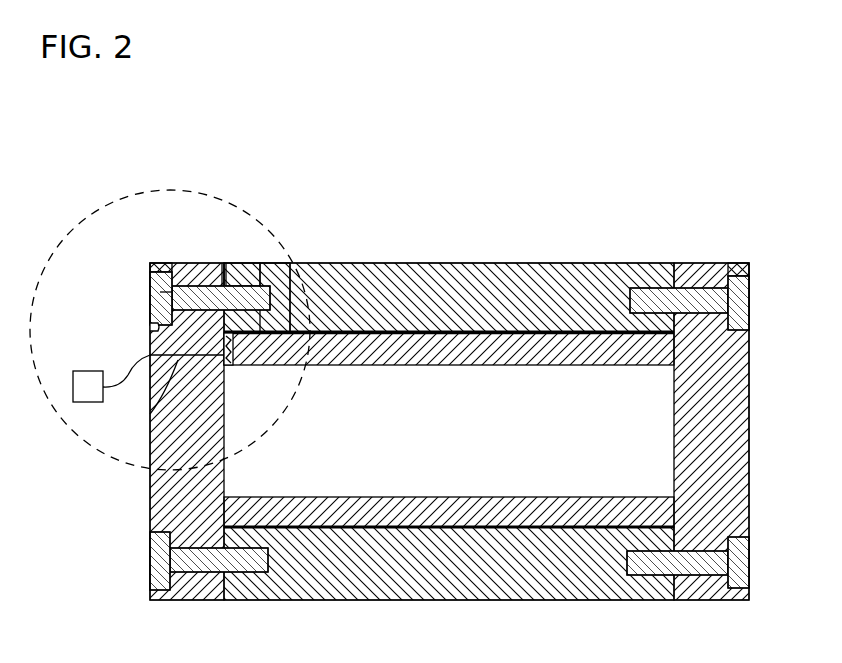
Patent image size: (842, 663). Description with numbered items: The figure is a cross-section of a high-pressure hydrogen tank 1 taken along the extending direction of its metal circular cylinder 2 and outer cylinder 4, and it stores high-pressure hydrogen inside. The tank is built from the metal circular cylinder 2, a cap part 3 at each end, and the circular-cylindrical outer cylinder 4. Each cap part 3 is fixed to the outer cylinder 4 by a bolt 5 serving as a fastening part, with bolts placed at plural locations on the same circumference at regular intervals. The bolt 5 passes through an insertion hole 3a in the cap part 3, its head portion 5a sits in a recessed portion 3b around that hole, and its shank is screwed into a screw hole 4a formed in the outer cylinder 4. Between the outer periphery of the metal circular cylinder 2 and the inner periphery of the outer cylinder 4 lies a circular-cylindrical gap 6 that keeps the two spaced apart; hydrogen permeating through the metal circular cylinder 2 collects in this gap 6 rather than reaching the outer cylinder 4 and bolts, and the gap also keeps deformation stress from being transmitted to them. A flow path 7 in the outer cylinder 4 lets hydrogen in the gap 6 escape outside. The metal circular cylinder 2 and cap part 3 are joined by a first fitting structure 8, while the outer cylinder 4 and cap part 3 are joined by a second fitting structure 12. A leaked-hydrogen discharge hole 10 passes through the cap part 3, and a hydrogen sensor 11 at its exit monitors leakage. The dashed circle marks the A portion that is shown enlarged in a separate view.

The high-pressure hydrogen tank 1 is at (576, 256).
The metal circular cylinder 2 is at (447, 352).
The cap part 3 is at (706, 264).
The insertion hole 3a is at (190, 264).
The recessed portion 3b is at (150, 338).
The outer cylinder 4 is at (507, 264).
The screw hole 4a is at (241, 264).
The bolt 5 is at (260, 263).
The head portion 5a is at (160, 298).
The gap 6 is at (407, 330).
The flow path 7 is at (316, 263).
The first fitting structure 8 is at (230, 337).
The leaked-hydrogen discharge hole 10 is at (150, 414).
The hydrogen sensor 11 is at (88, 402).
The second fitting structure 12 is at (205, 263).
The A portion A is at (190, 190).